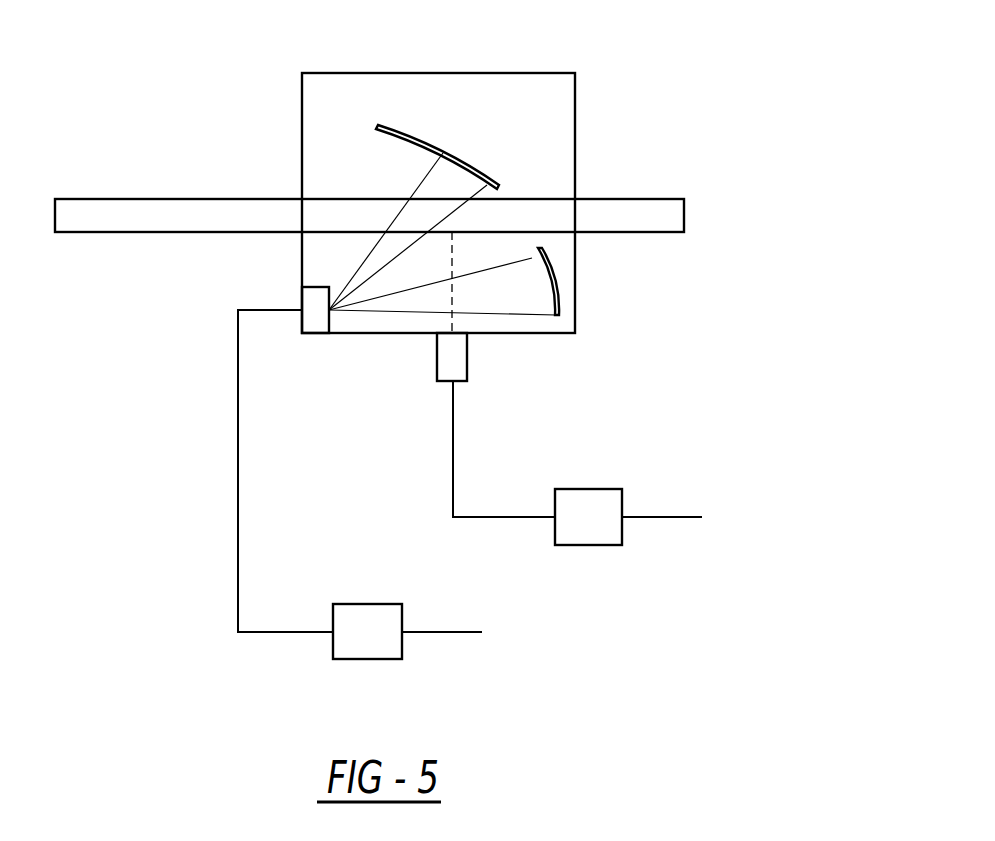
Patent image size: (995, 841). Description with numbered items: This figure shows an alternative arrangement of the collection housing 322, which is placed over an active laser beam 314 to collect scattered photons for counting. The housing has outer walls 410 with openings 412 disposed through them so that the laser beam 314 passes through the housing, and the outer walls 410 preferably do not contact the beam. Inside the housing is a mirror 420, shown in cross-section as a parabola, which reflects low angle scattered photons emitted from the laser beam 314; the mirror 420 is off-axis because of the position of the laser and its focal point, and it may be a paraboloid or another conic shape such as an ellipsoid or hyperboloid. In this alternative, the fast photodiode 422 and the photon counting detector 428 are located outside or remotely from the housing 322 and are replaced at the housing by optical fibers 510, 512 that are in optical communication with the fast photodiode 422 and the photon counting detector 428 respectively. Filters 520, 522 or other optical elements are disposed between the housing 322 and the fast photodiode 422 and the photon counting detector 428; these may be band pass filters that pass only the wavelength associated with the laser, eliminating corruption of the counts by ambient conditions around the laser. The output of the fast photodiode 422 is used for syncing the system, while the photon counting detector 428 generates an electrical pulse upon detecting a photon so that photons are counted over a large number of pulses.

The collection housing 322 is at (640, 63).
The laser beam 314 is at (672, 199).
The openings 412 is at (300, 201).
The mirror 420 is at (410, 133).
The outer walls 410 is at (575, 282).
The filter 520 is at (317, 323).
The filter 522 is at (467, 362).
The optical fiber 510 is at (238, 507).
The optical fiber 512 is at (453, 473).
The fast photodiode 422 is at (357, 659).
The photon counting detector 428 is at (603, 545).